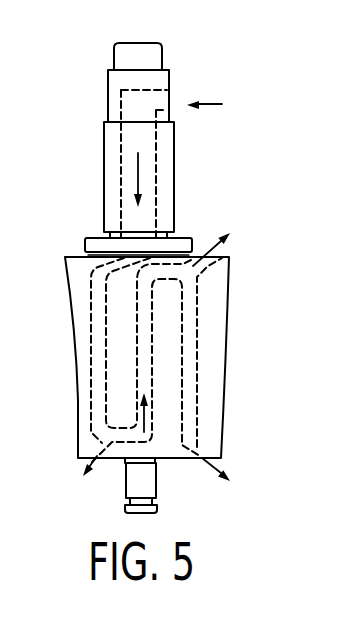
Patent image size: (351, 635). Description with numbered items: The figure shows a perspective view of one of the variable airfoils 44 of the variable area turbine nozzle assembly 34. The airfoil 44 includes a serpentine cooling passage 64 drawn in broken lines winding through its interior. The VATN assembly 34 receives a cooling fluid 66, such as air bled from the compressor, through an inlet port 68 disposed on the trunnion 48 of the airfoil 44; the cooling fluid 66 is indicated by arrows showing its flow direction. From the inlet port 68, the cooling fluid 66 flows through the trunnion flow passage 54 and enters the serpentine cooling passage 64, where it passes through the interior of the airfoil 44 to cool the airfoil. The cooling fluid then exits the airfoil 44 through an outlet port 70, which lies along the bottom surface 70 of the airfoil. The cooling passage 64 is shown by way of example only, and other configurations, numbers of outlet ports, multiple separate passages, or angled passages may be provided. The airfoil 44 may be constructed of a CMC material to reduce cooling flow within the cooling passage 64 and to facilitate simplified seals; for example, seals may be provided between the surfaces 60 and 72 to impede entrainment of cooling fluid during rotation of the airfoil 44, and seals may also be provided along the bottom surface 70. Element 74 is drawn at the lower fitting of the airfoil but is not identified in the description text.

The VATN assembly 34 is at (74, 58).
The variable airfoil 44 is at (212, 388).
The trunnion 48 is at (172, 169).
The trunnion flow passage 54 is at (120, 208).
The surface 60 is at (190, 231).
The serpentine cooling passage 64 is at (90, 355).
The cooling fluid 66 is at (222, 104).
The inlet port 68 is at (168, 88).
The outlet port 70 is at (232, 262).
The surface 72 is at (83, 252).
The bottom fitting 74 is at (164, 460).